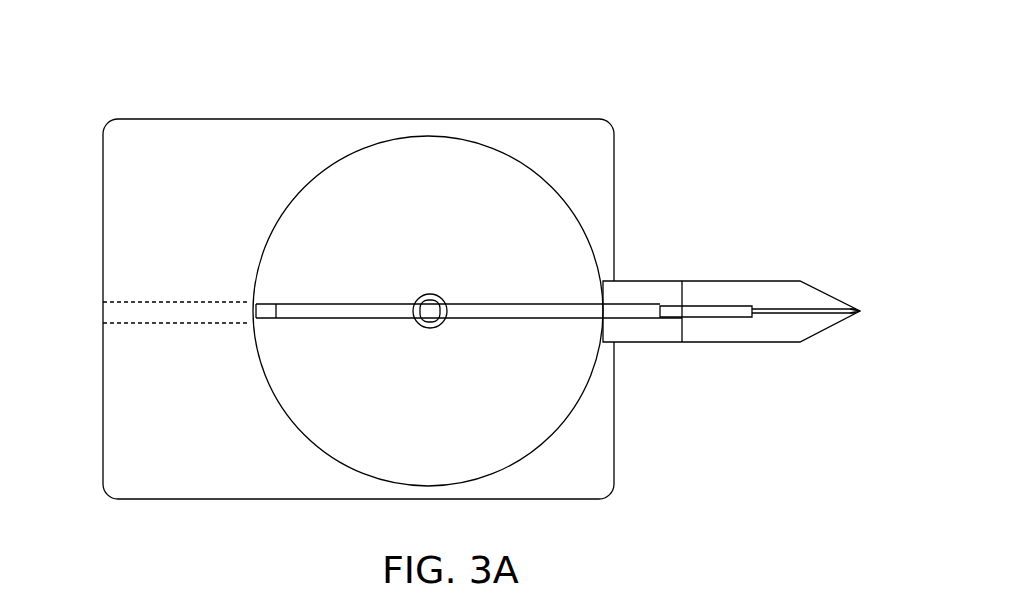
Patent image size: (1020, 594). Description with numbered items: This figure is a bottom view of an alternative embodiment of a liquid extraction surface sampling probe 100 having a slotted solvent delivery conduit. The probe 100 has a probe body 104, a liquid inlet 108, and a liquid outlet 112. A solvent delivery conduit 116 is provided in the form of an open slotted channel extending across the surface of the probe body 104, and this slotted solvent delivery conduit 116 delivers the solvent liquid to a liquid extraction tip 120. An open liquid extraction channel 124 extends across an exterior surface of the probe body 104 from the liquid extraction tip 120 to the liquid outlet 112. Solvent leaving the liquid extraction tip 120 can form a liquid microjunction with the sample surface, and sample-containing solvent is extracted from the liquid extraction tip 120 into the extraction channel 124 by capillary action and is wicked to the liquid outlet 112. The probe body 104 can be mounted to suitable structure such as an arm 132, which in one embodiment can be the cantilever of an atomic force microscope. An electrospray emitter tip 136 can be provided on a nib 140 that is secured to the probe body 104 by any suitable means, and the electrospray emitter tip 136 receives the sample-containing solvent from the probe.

The liquid extraction surface sampling probe 100 is at (450, 88).
The probe body 104 is at (358, 150).
The liquid inlet 108 is at (103, 312).
The liquid outlet 112 is at (653, 313).
The solvent delivery conduit 116 is at (360, 304).
The liquid extraction tip 120 is at (430, 328).
The liquid extraction channel 124 is at (520, 304).
The arm 132 is at (552, 119).
The electrospray emitter tip 136 is at (860, 310).
The nib 140 is at (747, 330).